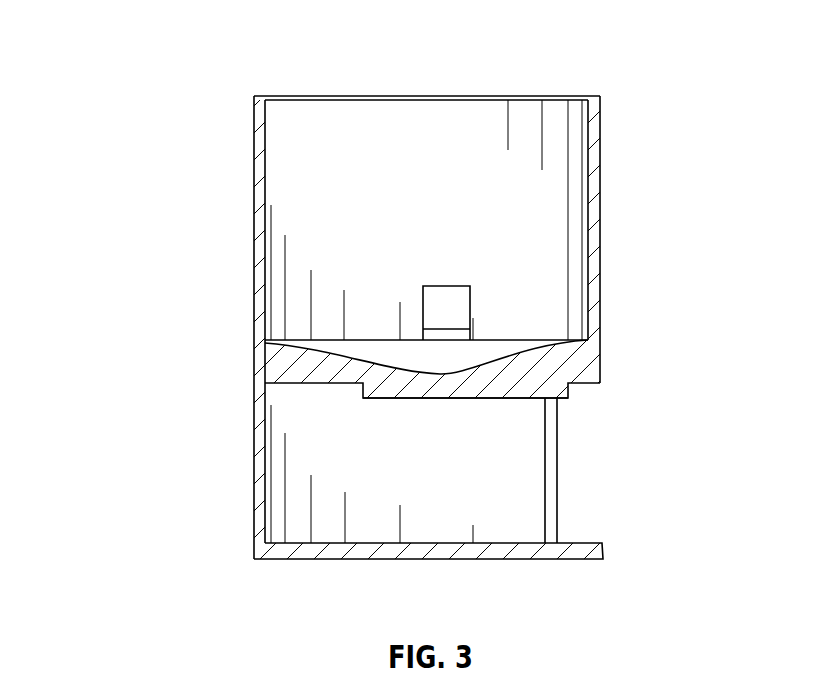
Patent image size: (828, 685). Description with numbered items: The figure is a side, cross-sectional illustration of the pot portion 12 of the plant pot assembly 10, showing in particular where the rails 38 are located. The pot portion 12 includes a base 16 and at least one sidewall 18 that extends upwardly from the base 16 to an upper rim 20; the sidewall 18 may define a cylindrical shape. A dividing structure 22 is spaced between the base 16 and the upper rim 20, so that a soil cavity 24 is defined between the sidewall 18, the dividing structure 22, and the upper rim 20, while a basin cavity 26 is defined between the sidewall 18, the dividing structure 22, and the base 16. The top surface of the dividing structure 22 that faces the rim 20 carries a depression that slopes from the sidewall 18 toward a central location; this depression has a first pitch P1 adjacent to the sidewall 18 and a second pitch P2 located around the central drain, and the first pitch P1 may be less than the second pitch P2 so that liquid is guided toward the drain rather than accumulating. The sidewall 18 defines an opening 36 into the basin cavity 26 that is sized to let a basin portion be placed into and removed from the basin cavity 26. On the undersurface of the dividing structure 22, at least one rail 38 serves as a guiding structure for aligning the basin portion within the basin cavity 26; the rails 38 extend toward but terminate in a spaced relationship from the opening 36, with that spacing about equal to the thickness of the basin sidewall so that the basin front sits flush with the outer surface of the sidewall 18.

The plant pot assembly 10 is at (134, 60).
The pot portion 12 is at (622, 100).
The base 16 is at (452, 562).
The sidewall 18 is at (254, 240).
The upper rim 20 is at (256, 127).
The dividing structure 22 is at (270, 368).
The soil cavity 24 is at (461, 208).
The basin cavity 26 is at (495, 489).
The opening 36 is at (595, 546).
The rail 38 is at (412, 402).
The first pitch P1 is at (322, 350).
The second pitch P2 is at (487, 358).